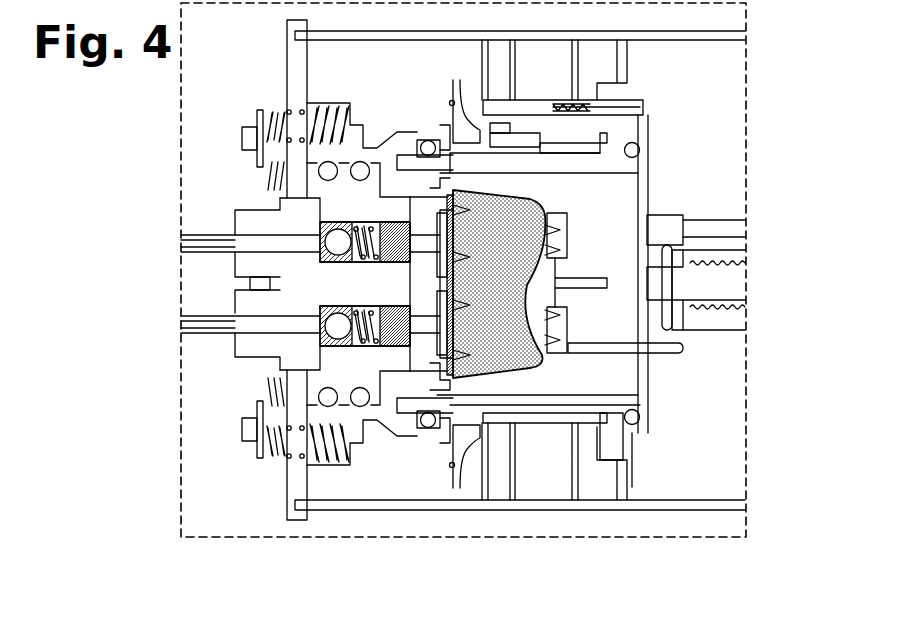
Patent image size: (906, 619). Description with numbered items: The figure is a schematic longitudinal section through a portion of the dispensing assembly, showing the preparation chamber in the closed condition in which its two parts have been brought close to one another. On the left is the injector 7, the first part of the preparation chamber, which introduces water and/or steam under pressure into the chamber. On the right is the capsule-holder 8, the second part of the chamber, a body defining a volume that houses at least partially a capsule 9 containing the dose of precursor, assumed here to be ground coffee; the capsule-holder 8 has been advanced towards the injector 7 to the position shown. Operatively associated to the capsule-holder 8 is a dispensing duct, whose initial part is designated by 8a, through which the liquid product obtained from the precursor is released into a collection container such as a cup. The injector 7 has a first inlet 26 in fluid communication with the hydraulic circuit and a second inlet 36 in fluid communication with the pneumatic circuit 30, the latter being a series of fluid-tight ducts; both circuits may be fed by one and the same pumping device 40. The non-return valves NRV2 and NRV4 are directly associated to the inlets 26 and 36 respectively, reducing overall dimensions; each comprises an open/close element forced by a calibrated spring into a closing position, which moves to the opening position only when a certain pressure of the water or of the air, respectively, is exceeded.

The injector 7 is at (270, 369).
The capsule-holder 8 is at (666, 198).
The dispensing duct 8a is at (665, 352).
The capsule 9 is at (532, 190).
The first inlet 26 is at (372, 346).
The pneumatic circuit 30 is at (207, 226).
The second inlet 36 is at (373, 223).
The pumping device 40 is at (207, 342).
The non-return valve NRV2 is at (330, 297).
The non-return valve NRV4 is at (330, 269).